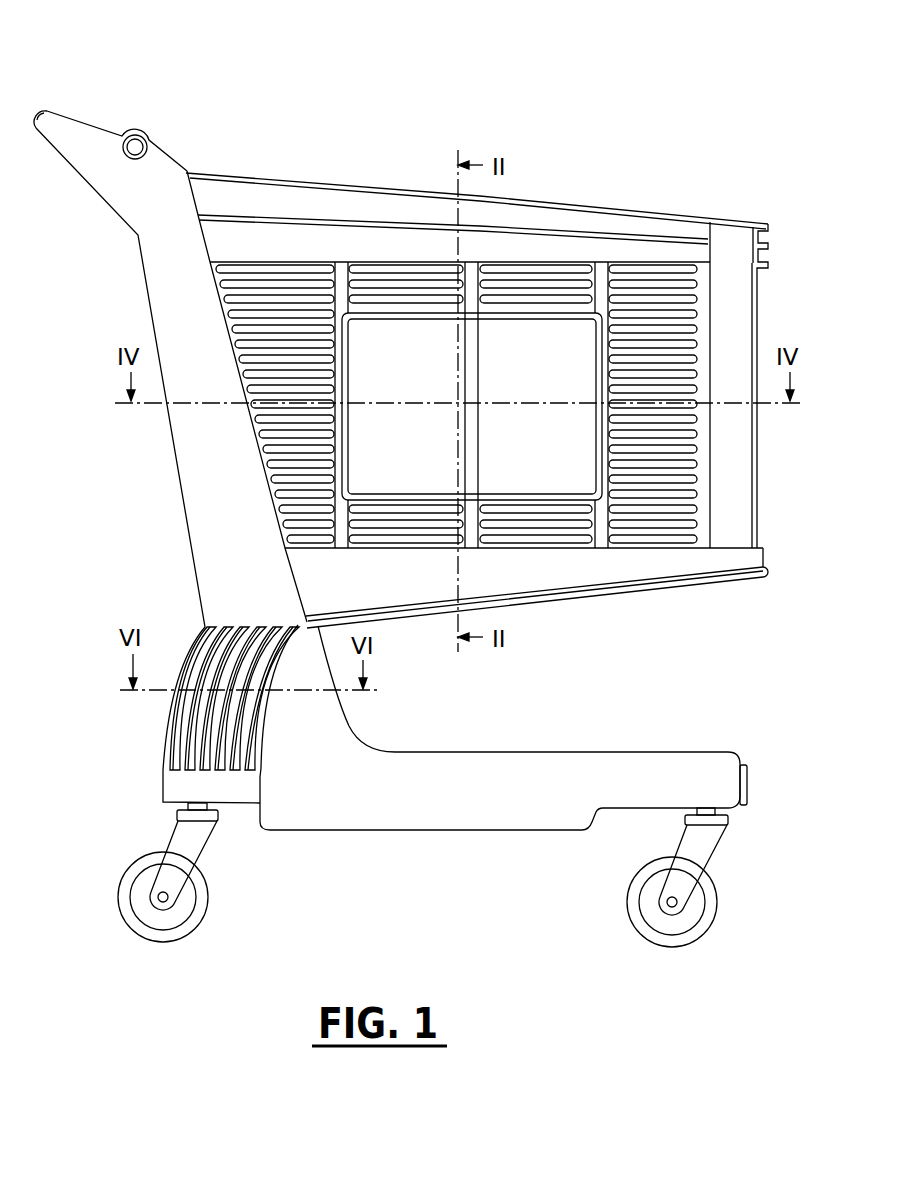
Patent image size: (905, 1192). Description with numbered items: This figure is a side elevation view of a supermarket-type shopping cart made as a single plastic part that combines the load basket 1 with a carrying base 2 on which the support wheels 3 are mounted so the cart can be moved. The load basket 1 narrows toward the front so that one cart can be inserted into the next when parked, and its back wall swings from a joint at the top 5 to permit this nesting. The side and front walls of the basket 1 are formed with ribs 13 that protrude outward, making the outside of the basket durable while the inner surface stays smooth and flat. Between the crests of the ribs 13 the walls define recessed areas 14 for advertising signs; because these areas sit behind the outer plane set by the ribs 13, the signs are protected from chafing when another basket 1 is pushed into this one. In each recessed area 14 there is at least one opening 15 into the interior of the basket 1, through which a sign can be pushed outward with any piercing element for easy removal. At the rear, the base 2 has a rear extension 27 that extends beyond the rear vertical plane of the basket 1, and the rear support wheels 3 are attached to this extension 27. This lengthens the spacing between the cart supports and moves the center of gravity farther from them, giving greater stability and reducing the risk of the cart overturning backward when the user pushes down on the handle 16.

The load basket 1 is at (608, 600).
The carrying base 2 is at (527, 812).
The support wheels 3 is at (162, 918).
The joint at the top 5 is at (135, 145).
The ribs 13 is at (767, 263).
The recessed areas 14 is at (537, 342).
The opening 15 is at (343, 294).
The handle 16 is at (35, 113).
The rear extension 27 is at (180, 745).